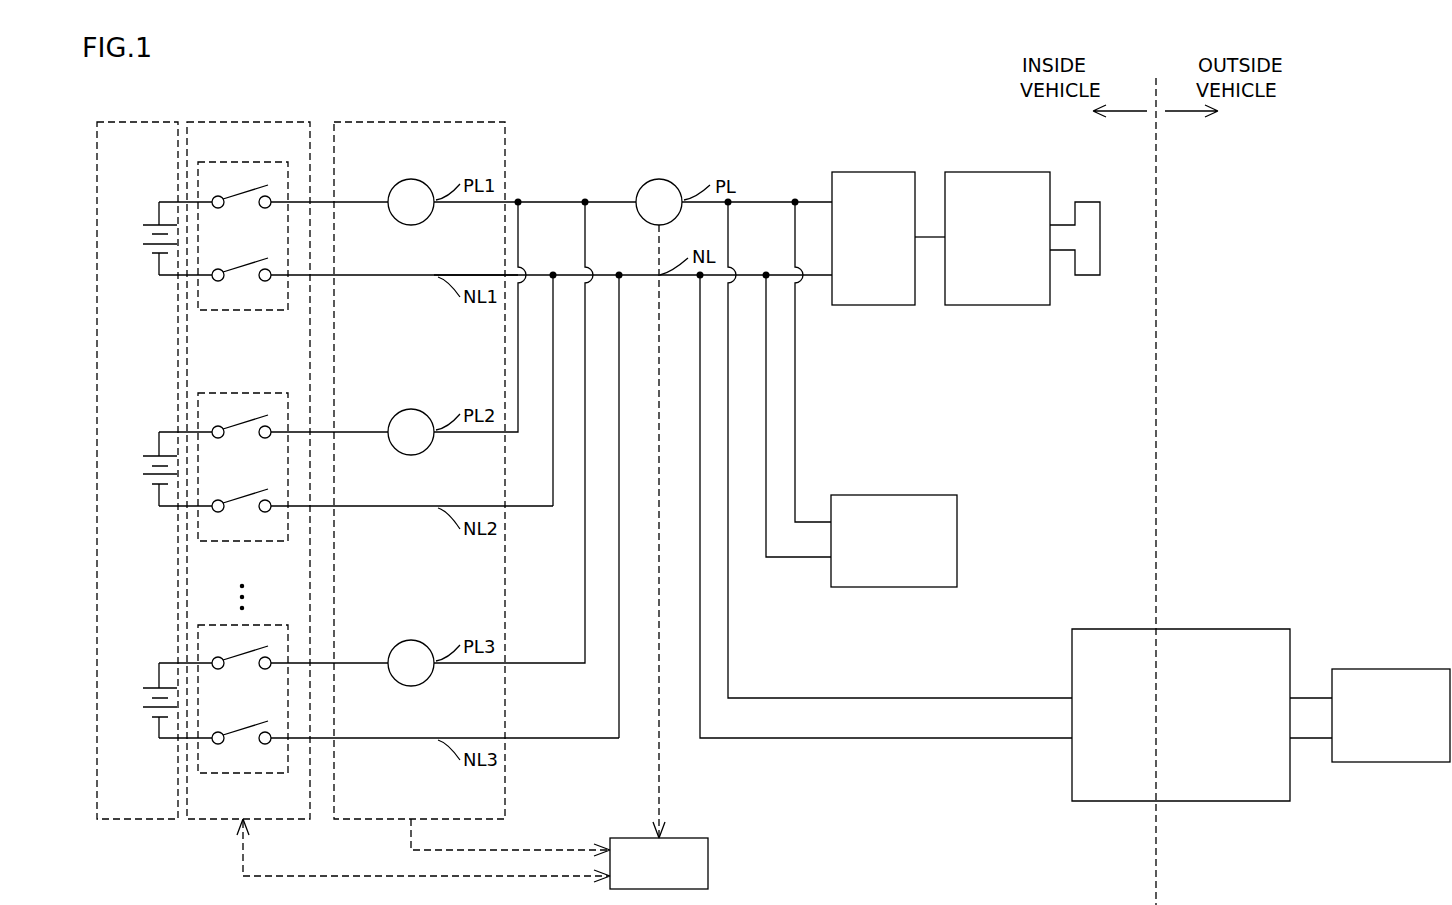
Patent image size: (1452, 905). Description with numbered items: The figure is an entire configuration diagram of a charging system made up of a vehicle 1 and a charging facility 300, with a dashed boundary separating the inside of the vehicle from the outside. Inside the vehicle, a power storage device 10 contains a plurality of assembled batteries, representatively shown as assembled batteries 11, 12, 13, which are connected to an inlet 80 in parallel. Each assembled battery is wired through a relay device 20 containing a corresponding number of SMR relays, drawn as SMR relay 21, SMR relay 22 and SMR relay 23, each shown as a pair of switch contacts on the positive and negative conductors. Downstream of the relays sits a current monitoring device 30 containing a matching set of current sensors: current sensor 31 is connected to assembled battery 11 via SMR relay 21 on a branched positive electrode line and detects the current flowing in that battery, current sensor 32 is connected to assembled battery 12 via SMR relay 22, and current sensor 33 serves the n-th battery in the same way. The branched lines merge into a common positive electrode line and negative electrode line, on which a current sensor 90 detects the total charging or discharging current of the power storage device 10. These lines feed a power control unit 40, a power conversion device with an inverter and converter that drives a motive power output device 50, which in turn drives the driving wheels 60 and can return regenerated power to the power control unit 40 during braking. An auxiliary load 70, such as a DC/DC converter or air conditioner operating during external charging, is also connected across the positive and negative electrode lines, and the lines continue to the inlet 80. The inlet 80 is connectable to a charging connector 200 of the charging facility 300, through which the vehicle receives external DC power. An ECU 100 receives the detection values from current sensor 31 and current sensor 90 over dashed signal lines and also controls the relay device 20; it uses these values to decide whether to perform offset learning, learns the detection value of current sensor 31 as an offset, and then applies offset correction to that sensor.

The vehicle 1 is at (818, 115).
The power storage device 10 is at (130, 121).
The assembled battery 11 is at (152, 223).
The assembled battery 12 is at (152, 454).
The assembled battery 13 is at (152, 686).
The relay device 20 is at (253, 121).
The SMR relay 21 is at (248, 161).
The SMR relay 22 is at (248, 392).
The SMR relay 23 is at (248, 624).
The current monitoring device 30 is at (472, 121).
The current sensor 31 is at (411, 178).
The current sensor 32 is at (411, 408).
The current sensor 33 is at (411, 639).
The power control unit 40 is at (862, 172).
The motive power output device 50 is at (1012, 172).
The driving wheels 60 is at (1088, 202).
The auxiliary load 70 is at (926, 495).
The inlet 80 is at (1098, 629).
The current sensor 90 is at (659, 178).
The ECU 100 is at (682, 838).
The charging connector 200 is at (1198, 629).
The charging facility 300 is at (1396, 669).